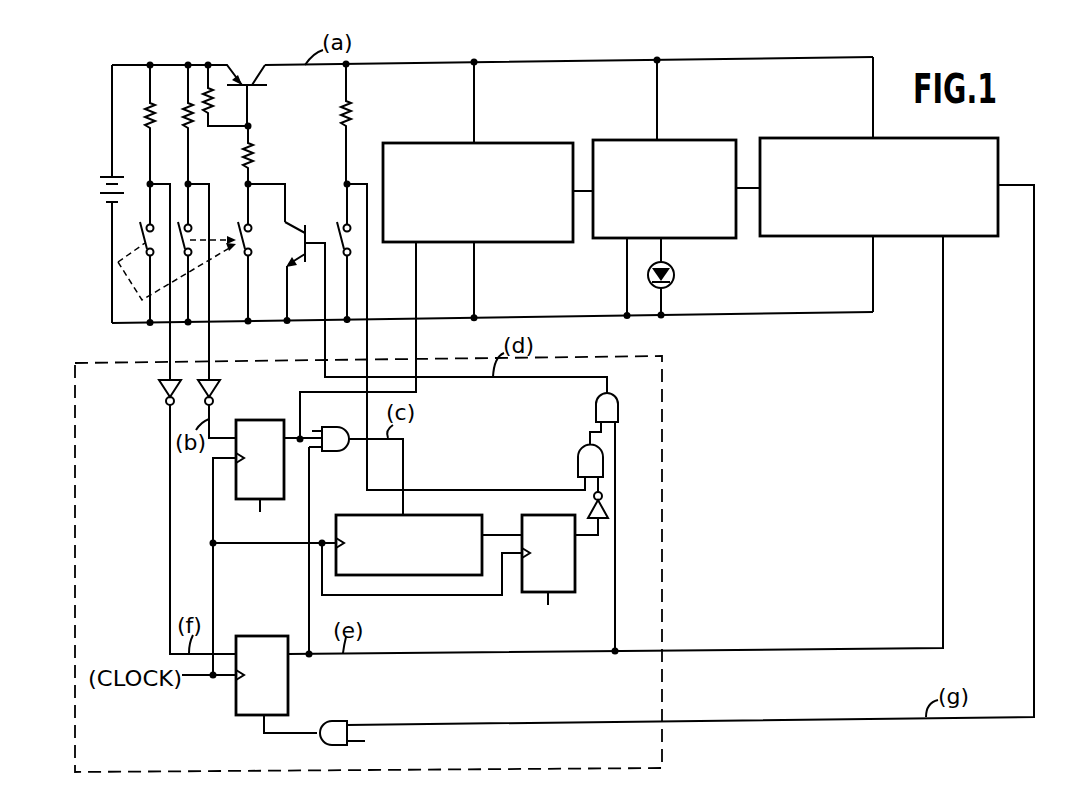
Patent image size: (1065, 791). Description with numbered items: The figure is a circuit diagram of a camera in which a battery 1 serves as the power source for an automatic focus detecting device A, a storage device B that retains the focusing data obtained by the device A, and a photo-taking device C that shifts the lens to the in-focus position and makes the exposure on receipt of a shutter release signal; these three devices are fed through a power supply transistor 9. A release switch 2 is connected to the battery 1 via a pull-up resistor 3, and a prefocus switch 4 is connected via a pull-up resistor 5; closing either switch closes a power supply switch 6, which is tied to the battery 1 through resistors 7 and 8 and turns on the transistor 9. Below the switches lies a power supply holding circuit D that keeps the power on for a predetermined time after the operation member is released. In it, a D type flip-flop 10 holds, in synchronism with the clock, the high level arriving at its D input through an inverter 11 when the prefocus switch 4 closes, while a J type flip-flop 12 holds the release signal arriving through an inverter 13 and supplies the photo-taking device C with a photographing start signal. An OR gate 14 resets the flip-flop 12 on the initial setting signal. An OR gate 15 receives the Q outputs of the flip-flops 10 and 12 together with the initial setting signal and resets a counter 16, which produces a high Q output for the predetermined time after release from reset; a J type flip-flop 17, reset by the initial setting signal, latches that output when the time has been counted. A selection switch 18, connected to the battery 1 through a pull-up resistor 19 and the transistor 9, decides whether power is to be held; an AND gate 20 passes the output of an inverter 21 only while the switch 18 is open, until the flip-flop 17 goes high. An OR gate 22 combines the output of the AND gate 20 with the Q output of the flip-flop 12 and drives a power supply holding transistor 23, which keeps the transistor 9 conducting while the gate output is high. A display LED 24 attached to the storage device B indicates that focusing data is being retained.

The battery 1 is at (100, 192).
The release switch 2 is at (146, 232).
The pull-up resistor 3 is at (145, 108).
The prefocus switch 4 is at (193, 231).
The pull-up resistor 5 is at (185, 108).
The power supply switch 6 is at (252, 241).
The resistor 7 is at (214, 101).
The resistor 8 is at (253, 154).
The power supply transistor 9 is at (250, 77).
The D type flip-flop 10 is at (255, 410).
The inverter 11 is at (206, 392).
The J type flip-flop 12 is at (260, 635).
The inverter 13 is at (158, 391).
The OR gate 14 is at (331, 721).
The OR gate 15 is at (336, 451).
The counter 16 is at (400, 575).
The J type flip-flop 17 is at (575, 562).
The selection switch 18 is at (355, 240).
The pull-up resistor 19 is at (340, 116).
The AND gate 20 is at (578, 462).
The inverter 21 is at (608, 513).
The OR gate 22 is at (596, 403).
The power supply holding transistor 23 is at (307, 222).
The display LED 24 is at (674, 282).
The automatic focus detecting device A is at (421, 143).
The storage device B is at (620, 140).
The photo-taking device C is at (808, 138).
The power supply holding circuit D is at (664, 731).